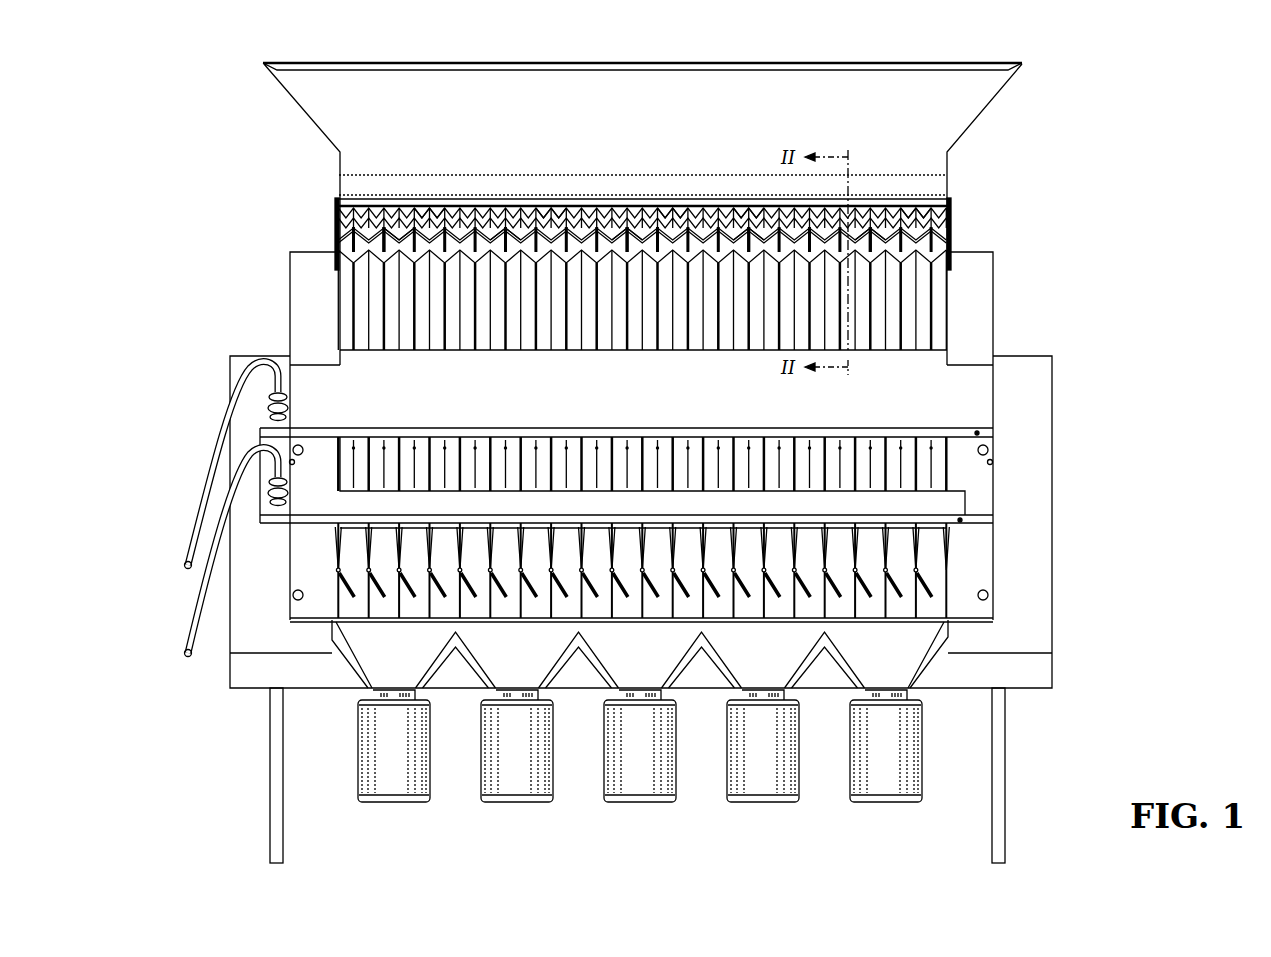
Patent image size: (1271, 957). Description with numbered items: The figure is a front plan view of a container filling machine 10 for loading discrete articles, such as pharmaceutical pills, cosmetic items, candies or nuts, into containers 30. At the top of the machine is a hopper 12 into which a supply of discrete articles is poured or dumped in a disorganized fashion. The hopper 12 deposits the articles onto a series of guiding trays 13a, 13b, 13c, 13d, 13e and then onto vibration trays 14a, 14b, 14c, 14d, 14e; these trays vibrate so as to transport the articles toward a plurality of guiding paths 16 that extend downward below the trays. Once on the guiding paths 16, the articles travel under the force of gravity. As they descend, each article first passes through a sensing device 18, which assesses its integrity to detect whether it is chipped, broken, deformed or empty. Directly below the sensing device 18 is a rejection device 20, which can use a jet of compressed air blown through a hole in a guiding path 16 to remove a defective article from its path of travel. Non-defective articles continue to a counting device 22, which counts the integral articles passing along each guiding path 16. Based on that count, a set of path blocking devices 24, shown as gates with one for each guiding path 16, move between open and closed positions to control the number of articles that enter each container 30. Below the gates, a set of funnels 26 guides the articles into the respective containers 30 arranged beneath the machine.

The container filling machine 10 is at (158, 143).
The hopper 12 is at (932, 118).
The guiding tray 13a is at (423, 213).
The guiding tray 13b is at (547, 213).
The guiding tray 13c is at (668, 213).
The guiding tray 13d is at (740, 213).
The guiding tray 13e is at (910, 213).
The vibration tray 14a is at (393, 247).
The vibration tray 14b is at (513, 245).
The vibration tray 14c is at (635, 245).
The vibration tray 14d is at (758, 243).
The vibration tray 14e is at (877, 243).
The guiding paths 16 is at (940, 305).
The sensing device 18 is at (943, 405).
The rejection device 20 is at (937, 457).
The counting device 22 is at (945, 498).
The path blocking devices 24 is at (928, 582).
The funnels 26 is at (888, 652).
The containers 30 is at (392, 785).